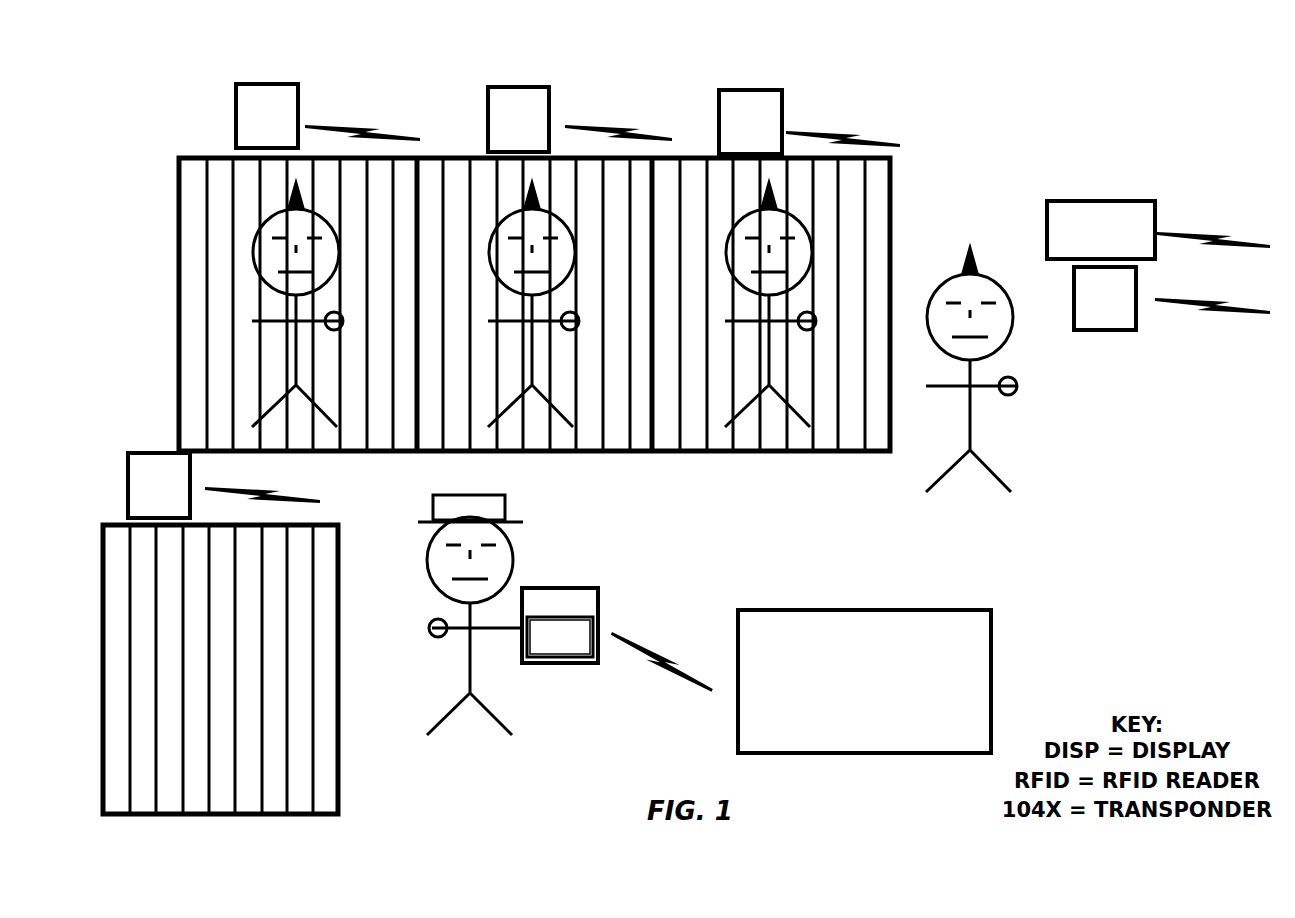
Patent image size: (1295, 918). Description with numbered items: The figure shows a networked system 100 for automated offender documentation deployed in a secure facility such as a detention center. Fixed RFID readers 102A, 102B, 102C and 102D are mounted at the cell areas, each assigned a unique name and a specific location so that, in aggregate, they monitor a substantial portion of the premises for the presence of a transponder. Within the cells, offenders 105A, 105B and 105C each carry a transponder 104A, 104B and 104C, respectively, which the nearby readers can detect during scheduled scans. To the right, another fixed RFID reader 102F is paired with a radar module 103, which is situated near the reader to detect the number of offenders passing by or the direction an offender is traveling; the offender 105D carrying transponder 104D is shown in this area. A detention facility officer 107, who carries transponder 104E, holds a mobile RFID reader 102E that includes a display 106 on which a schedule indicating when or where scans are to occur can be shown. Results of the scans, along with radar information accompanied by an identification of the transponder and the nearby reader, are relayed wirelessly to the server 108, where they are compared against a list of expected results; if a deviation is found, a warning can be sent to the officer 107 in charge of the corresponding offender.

The networked system 100 is at (148, 112).
The RFID reader 102A is at (285, 92).
The RFID reader 102B is at (538, 98).
The RFID reader 102C is at (766, 100).
The RFID reader 102D is at (170, 463).
The RFID reader 102E is at (590, 605).
The RFID reader 102F is at (1126, 298).
The radar module 103 is at (1132, 212).
The transponder 104A is at (337, 313).
The transponder 104B is at (573, 313).
The transponder 104C is at (810, 313).
The transponder 104D is at (1012, 384).
The transponder 104E is at (437, 619).
The offender 105A is at (296, 222).
The offender 105B is at (532, 222).
The offender 105C is at (768, 222).
The offender 105D is at (975, 290).
The display 106 is at (582, 651).
The detention facility officer 107 is at (503, 562).
The server 108 is at (858, 623).